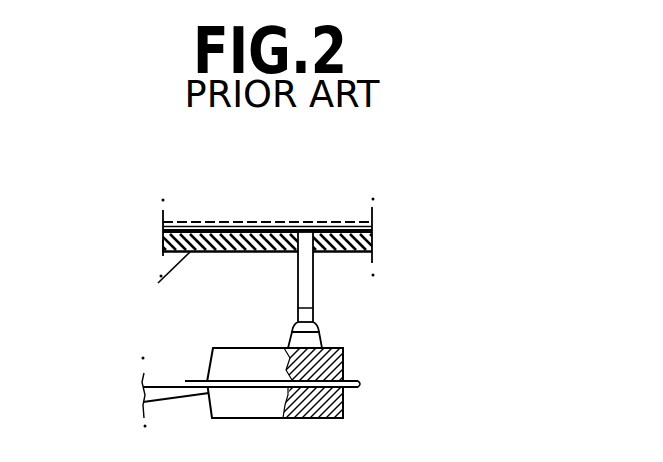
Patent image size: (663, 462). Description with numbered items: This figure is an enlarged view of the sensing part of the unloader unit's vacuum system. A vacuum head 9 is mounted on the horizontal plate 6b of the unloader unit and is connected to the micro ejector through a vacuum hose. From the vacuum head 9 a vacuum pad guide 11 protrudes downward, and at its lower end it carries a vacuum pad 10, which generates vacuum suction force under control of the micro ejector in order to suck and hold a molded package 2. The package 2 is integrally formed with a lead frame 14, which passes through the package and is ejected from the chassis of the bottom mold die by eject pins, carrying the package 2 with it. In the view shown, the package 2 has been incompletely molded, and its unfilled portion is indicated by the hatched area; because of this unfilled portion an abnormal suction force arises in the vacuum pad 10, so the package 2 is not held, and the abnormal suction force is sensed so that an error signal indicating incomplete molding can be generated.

The vacuum head 9 is at (307, 221).
The vacuum pad guide 11 is at (307, 287).
The vacuum pad 10 is at (307, 342).
The package 2 is at (208, 351).
The lead frame 14 is at (357, 380).
The horizontal plate 6b is at (158, 283).